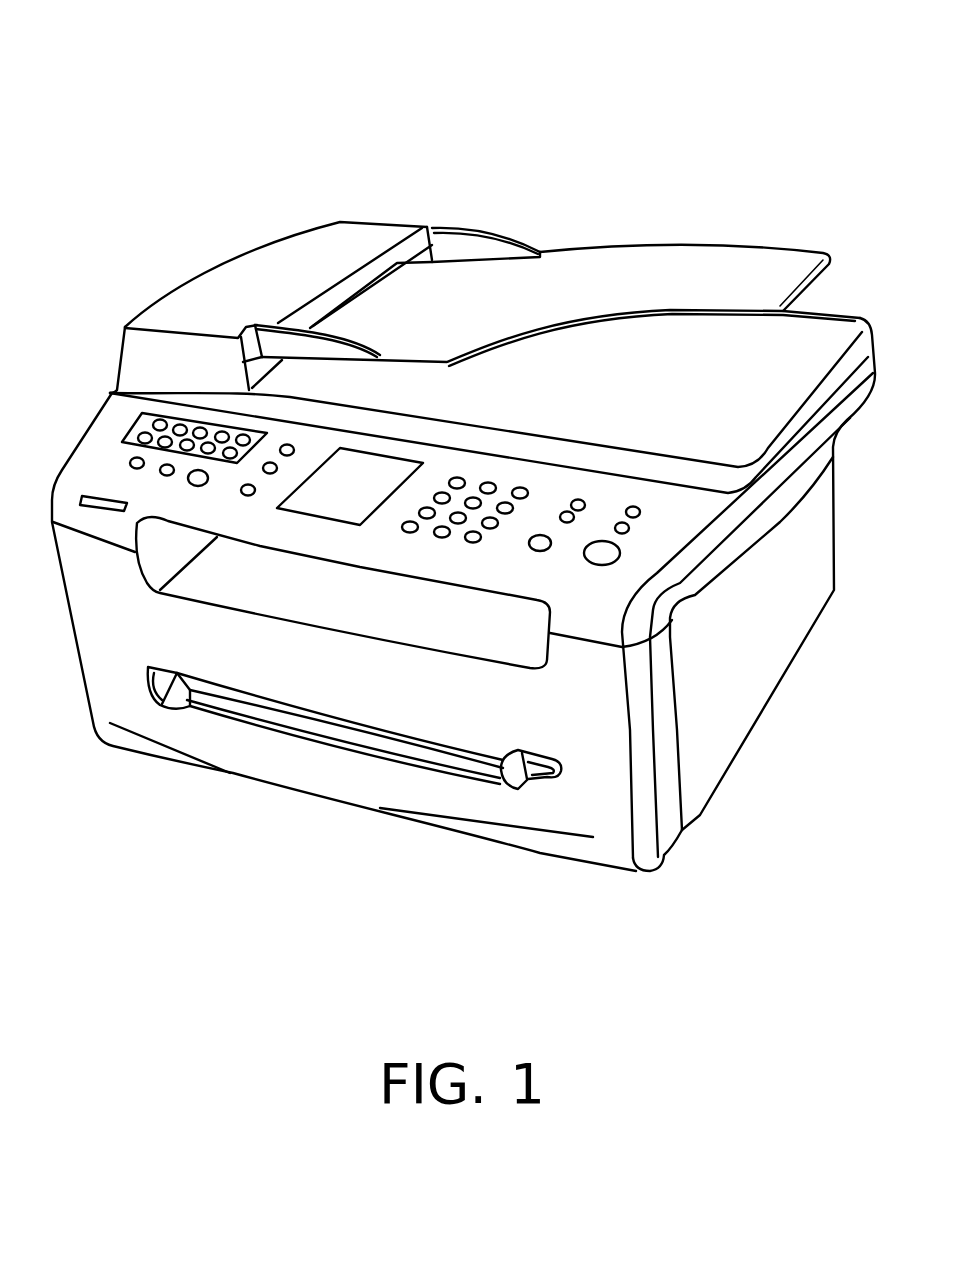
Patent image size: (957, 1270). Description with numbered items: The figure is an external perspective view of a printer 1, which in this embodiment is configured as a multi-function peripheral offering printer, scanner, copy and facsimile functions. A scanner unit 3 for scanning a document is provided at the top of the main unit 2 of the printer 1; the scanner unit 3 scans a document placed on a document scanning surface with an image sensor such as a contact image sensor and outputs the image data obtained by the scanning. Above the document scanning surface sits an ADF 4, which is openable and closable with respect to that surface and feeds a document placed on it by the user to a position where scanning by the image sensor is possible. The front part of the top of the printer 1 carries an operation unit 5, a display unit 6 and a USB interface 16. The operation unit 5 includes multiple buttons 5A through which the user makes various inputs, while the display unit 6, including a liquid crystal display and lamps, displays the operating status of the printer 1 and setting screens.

The printer 1 is at (451, 441).
The main unit 2 is at (742, 665).
The scanner unit 3 is at (183, 245).
The ADF 4 is at (343, 232).
The operation unit 5 is at (381, 529).
The buttons 5A is at (538, 541).
The display unit 6 is at (337, 502).
The USB interface 16 is at (97, 492).